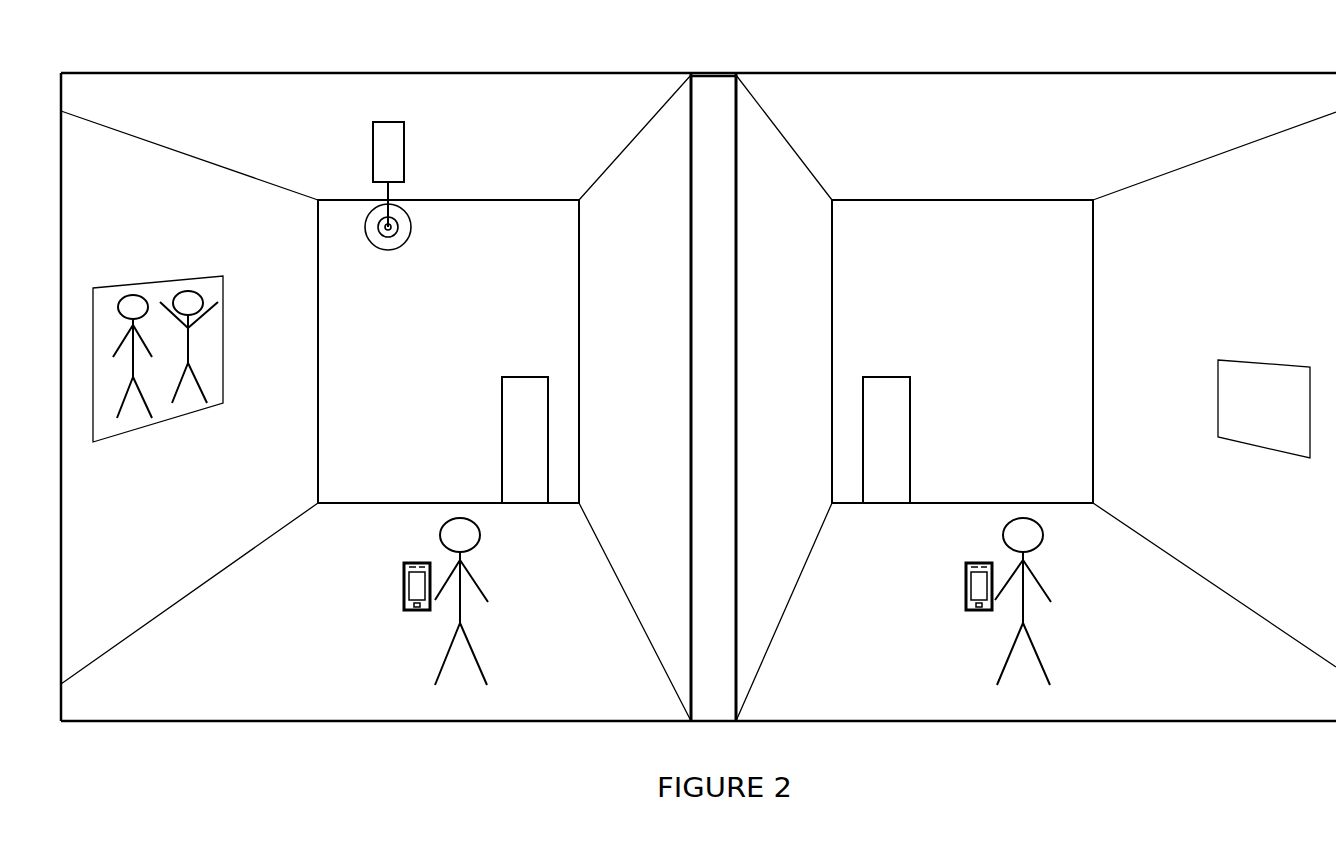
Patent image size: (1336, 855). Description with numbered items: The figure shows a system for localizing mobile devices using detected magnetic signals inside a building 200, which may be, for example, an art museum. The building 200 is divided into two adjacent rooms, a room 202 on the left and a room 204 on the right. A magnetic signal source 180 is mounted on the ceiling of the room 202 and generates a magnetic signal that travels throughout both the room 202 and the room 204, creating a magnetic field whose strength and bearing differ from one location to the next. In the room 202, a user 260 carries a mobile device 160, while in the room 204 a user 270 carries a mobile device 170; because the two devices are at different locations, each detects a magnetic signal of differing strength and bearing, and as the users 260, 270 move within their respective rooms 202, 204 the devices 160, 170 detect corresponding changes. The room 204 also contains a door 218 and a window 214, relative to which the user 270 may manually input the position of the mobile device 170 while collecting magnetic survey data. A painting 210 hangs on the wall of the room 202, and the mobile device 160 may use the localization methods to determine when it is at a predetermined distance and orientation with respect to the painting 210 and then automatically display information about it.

The building 200 is at (1193, 33).
The room 202 is at (597, 153).
The room 204 is at (1127, 160).
The mobile device 160 is at (402, 580).
The mobile device 170 is at (964, 580).
The magnetic signal source 180 is at (372, 152).
The painting 210 is at (168, 277).
The window 214 is at (1217, 395).
The door 218 is at (912, 425).
The user 260 is at (470, 577).
The user 270 is at (1033, 577).